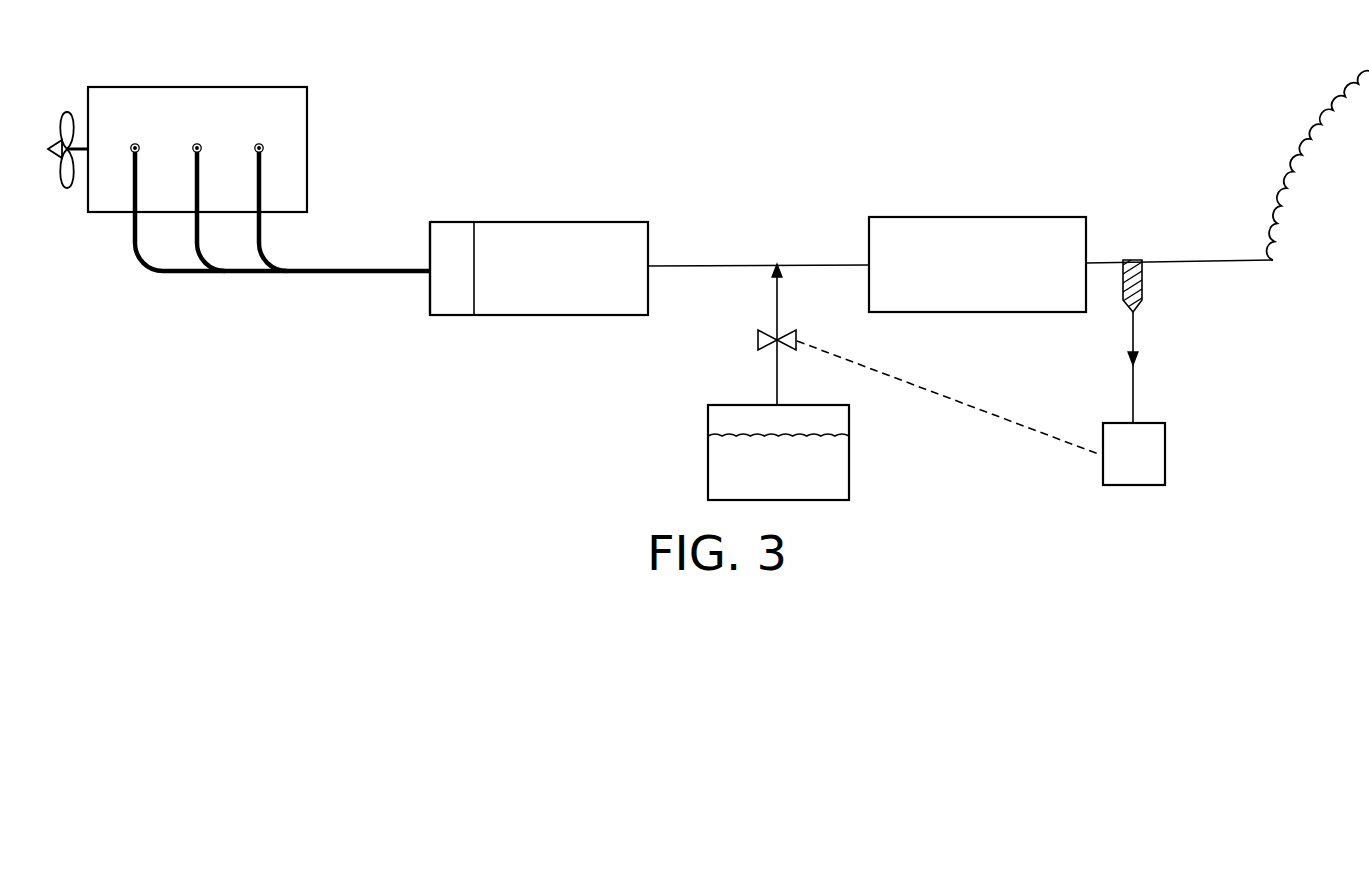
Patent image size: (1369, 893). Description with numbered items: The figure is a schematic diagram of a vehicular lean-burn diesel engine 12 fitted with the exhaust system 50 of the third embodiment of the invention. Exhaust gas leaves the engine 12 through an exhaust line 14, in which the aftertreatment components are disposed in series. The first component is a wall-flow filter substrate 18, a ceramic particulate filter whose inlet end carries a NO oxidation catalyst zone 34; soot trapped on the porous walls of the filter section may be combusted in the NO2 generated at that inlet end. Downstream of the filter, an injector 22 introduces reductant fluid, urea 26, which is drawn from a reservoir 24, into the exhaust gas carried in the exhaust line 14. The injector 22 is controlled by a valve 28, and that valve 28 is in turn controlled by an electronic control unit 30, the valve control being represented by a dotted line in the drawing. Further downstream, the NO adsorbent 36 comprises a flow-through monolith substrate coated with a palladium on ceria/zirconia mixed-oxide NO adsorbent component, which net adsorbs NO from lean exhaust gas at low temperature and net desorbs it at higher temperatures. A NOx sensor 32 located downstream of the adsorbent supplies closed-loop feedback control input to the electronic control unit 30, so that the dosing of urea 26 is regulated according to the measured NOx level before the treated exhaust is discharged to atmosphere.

The diesel engine 12 is at (210, 124).
The exhaust line 14 is at (348, 274).
The wall-flow filter substrate 18 is at (551, 221).
The injector 22 is at (775, 262).
The reservoir 24 is at (707, 454).
The urea 26 is at (792, 478).
The valve 28 is at (757, 341).
The electronic control unit 30 is at (1147, 466).
The NOx sensor 32 is at (1128, 259).
The NO oxidation catalyst zone 34 is at (445, 221).
The NO adsorbent 36 is at (972, 216).
The exhaust system 50 is at (904, 95).